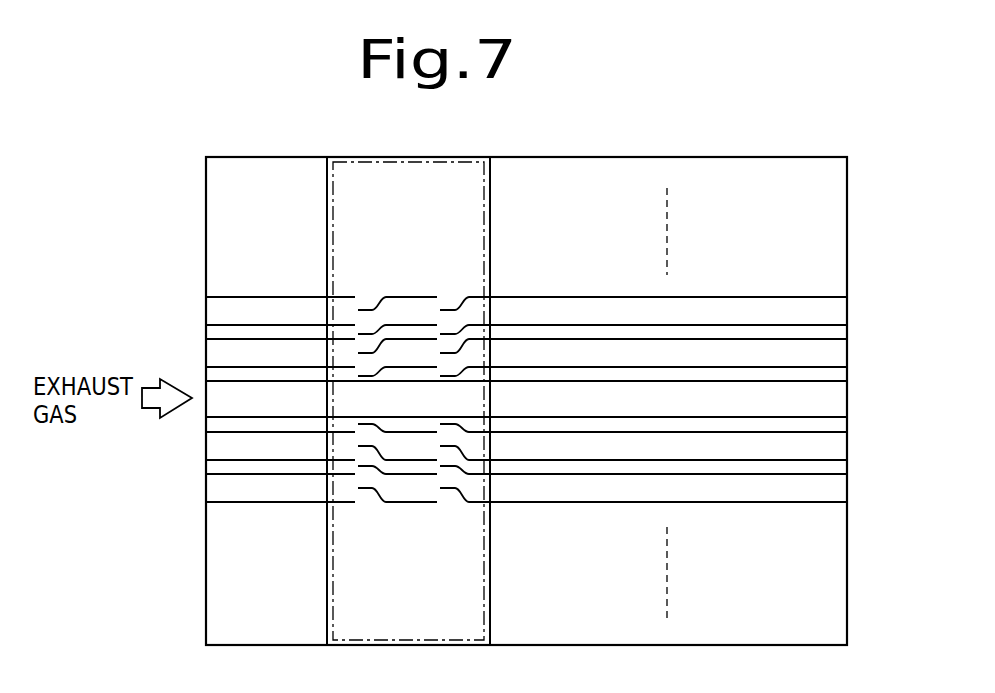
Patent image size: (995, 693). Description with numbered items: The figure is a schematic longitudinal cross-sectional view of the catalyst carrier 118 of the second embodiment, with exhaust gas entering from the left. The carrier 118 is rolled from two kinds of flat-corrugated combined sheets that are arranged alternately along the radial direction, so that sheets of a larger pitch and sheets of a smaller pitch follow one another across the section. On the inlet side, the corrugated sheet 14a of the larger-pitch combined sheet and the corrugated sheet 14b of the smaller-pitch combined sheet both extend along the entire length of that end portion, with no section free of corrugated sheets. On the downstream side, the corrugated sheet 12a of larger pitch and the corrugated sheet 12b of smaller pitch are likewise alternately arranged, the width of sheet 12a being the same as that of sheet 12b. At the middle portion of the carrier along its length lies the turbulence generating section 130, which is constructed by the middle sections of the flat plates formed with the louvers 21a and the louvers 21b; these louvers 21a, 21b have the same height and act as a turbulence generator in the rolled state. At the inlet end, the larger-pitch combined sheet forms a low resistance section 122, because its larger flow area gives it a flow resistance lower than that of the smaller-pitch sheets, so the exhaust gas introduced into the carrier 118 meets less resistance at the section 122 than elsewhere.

The catalyst carrier 118 is at (858, 320).
The corrugated sheet 14a is at (242, 303).
The corrugated sheet 14b is at (285, 335).
The low resistance section 122 is at (222, 310).
The corrugated sheet 12a is at (608, 312).
The corrugated sheet 12b is at (697, 335).
The louvers 21a is at (370, 307).
The louvers 21b is at (453, 337).
The turbulence generating section 130 is at (357, 647).